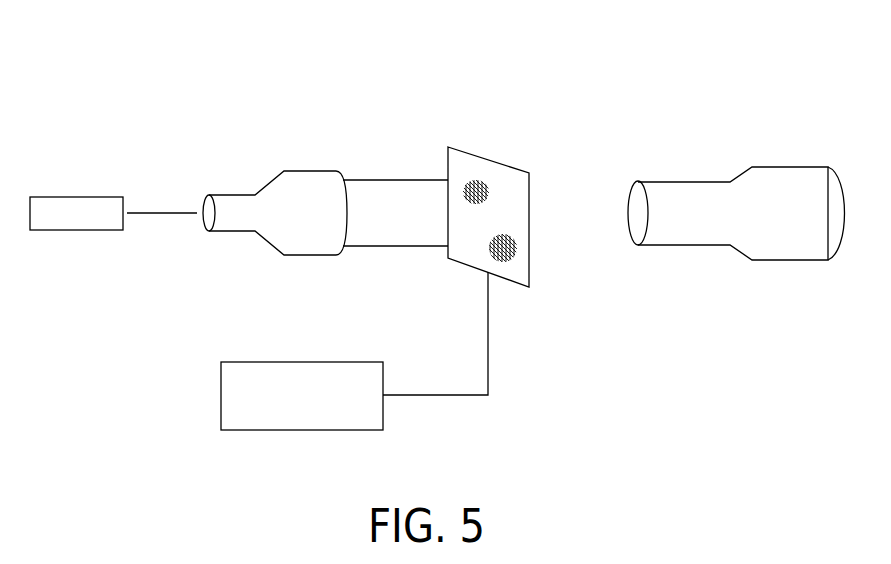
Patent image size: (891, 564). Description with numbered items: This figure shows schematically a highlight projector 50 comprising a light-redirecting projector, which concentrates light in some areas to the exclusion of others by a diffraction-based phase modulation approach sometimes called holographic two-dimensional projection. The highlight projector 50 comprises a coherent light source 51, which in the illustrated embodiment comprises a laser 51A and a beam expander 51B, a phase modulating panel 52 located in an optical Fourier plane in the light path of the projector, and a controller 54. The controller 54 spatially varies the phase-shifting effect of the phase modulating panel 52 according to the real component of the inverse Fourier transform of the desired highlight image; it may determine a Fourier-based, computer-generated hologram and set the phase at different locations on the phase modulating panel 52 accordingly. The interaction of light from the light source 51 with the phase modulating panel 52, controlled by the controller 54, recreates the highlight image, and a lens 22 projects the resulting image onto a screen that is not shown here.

The highlight projector 50 is at (439, 254).
The coherent light source 51 is at (33, 158).
The laser 51A is at (65, 232).
The beam expander 51B is at (302, 257).
The phase modulating panel 52 is at (468, 268).
The controller 54 is at (312, 432).
The lens 22 is at (778, 160).